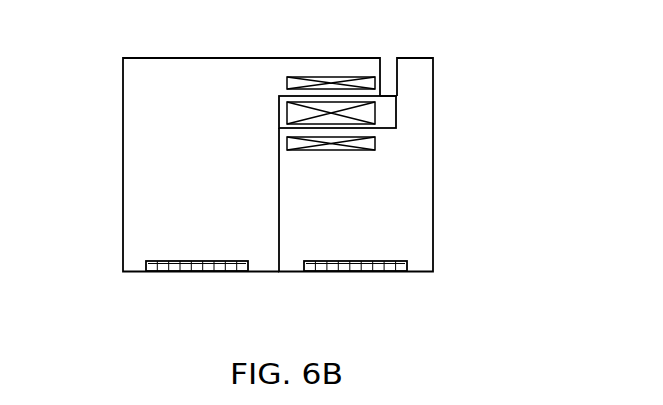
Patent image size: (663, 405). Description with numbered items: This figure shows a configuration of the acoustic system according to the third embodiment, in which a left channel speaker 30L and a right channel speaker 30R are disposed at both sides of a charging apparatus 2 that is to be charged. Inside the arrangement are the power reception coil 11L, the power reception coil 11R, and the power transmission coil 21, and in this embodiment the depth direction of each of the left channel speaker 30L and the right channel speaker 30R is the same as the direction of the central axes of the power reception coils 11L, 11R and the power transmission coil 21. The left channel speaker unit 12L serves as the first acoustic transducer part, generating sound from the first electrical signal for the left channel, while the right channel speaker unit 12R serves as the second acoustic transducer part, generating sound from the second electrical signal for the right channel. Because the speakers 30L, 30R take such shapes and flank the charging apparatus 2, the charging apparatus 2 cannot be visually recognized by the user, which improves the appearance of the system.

The left channel speaker 30L is at (208, 58).
The right channel speaker 30R is at (418, 58).
The power transmission coil 21 is at (279, 118).
The charging apparatus 2 is at (386, 96).
The power reception coil 11L is at (330, 77).
The power reception coil 11R is at (330, 150).
The left channel speaker unit 12L is at (195, 272).
The right channel speaker unit 12R is at (357, 272).